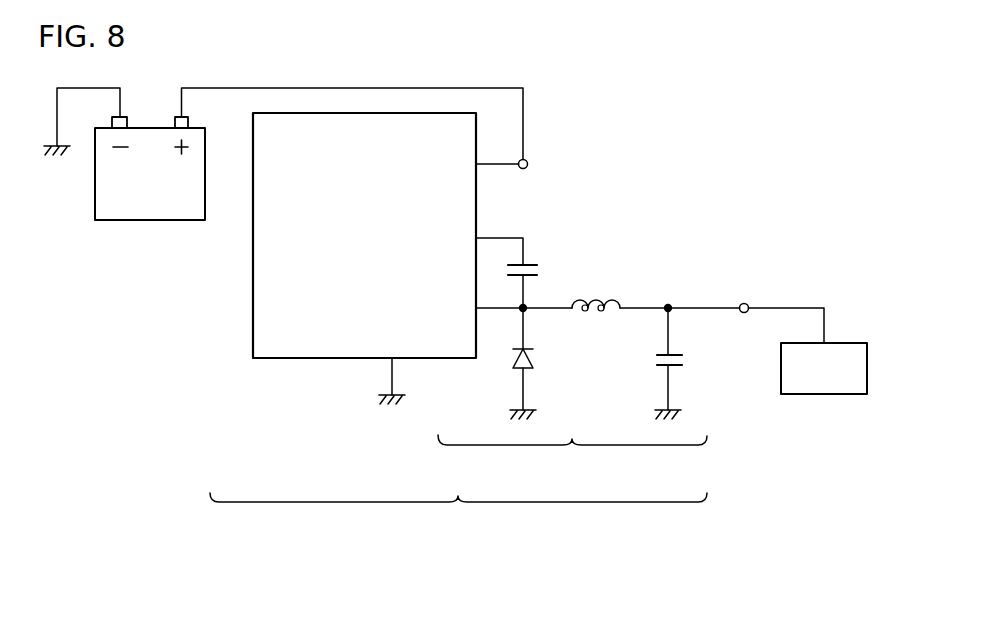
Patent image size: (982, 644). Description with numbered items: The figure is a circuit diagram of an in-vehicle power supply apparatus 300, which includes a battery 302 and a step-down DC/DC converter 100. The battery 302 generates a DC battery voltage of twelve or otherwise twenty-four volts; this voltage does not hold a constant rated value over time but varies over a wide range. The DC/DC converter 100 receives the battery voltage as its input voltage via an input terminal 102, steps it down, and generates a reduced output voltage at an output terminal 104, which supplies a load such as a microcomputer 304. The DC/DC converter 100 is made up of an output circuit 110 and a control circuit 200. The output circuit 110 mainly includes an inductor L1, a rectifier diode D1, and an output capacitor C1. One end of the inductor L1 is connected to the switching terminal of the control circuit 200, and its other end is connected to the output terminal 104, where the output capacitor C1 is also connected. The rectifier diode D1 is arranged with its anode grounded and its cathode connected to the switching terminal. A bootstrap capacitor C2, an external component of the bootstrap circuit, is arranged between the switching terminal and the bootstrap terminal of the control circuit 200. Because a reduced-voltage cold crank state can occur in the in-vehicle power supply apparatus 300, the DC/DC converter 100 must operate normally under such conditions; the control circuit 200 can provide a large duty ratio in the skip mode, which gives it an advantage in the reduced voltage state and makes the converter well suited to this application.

The DC/DC converter 100 is at (517, 325).
The input terminal 102 is at (528, 164).
The output terminal 104 is at (742, 302).
The output circuit 110 is at (572, 359).
The control circuit 200 is at (282, 360).
The in-vehicle power supply apparatus 300 is at (478, 599).
The battery 302 is at (150, 221).
The microcomputer 304 is at (808, 396).
The output capacitor C1 is at (654, 355).
The bootstrap capacitor C2 is at (543, 271).
The rectifier diode D1 is at (510, 357).
The inductor L1 is at (590, 318).